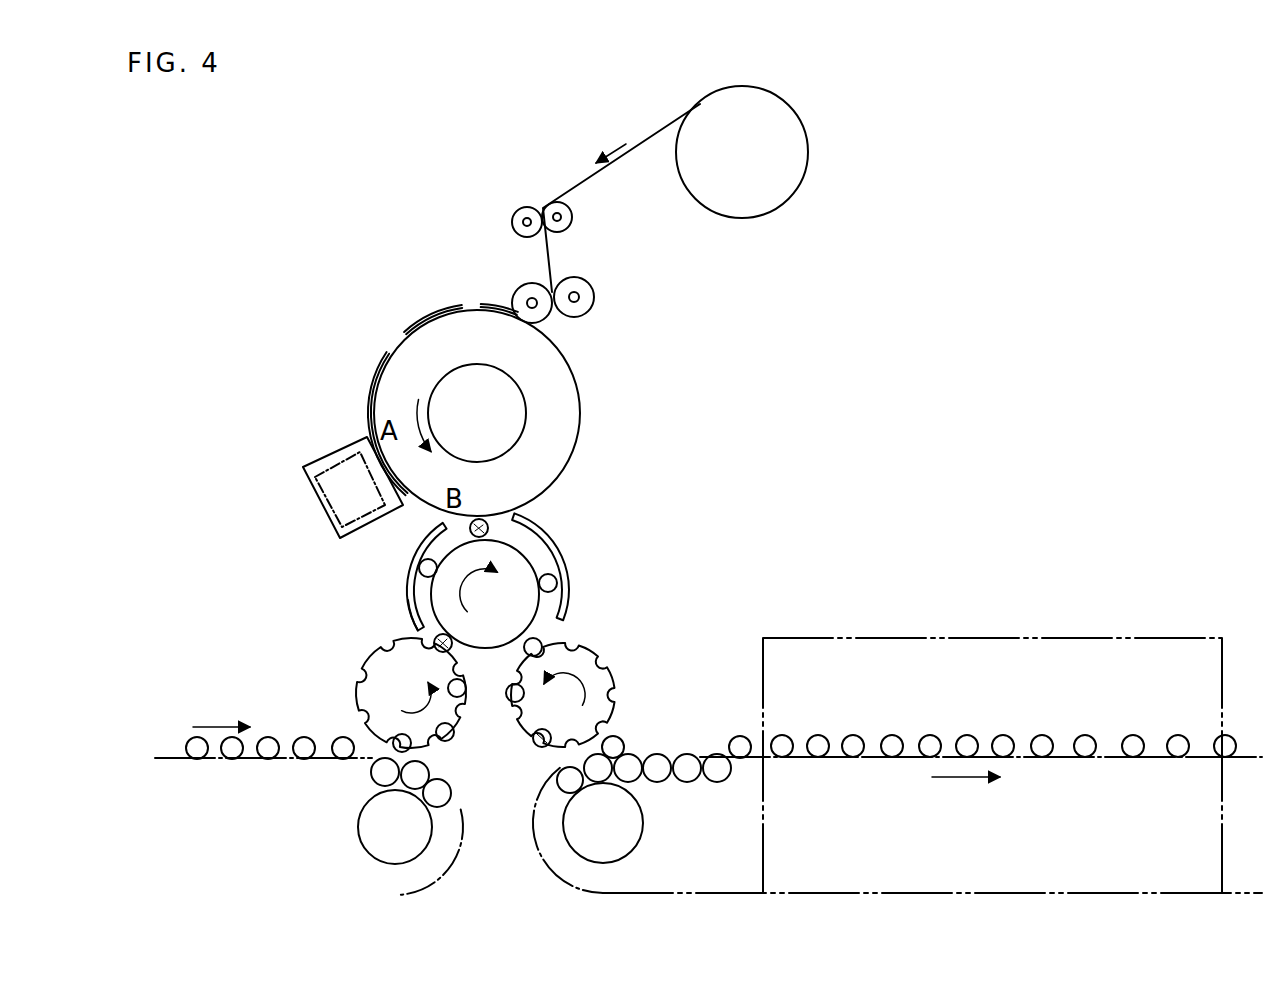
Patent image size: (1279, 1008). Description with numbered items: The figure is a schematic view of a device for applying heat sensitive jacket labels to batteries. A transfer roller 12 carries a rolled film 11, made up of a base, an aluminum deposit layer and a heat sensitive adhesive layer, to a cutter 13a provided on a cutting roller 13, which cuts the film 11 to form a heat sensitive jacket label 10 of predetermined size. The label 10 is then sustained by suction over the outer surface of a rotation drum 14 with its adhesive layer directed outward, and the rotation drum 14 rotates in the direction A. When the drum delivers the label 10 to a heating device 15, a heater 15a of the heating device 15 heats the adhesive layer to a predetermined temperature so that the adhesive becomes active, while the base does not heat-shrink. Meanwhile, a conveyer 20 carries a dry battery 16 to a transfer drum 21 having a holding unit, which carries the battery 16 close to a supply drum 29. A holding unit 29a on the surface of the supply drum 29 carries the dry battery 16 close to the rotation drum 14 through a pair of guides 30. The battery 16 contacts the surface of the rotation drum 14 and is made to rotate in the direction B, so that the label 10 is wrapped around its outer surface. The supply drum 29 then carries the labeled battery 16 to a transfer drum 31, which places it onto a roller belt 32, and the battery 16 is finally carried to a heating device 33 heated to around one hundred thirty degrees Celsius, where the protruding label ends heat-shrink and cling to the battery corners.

The heat sensitive jacket label 10 is at (497, 311).
The rolled film 11 is at (808, 152).
The transfer roller 12 is at (518, 207).
The cutting roller 13 is at (591, 312).
The cutter 13a is at (584, 274).
The rotation drum 14 is at (580, 432).
The heating device 15 is at (330, 521).
The heater 15a is at (310, 482).
The dry battery 16 is at (485, 522).
The conveyer 20 is at (325, 761).
The transfer drum 21 is at (366, 672).
The supply drum 29 is at (523, 572).
The holding unit 29a is at (415, 636).
The pair of guides 30 is at (417, 561).
The transfer drum 31 is at (610, 671).
The roller belt 32 is at (728, 772).
The heating device 33 is at (1082, 638).